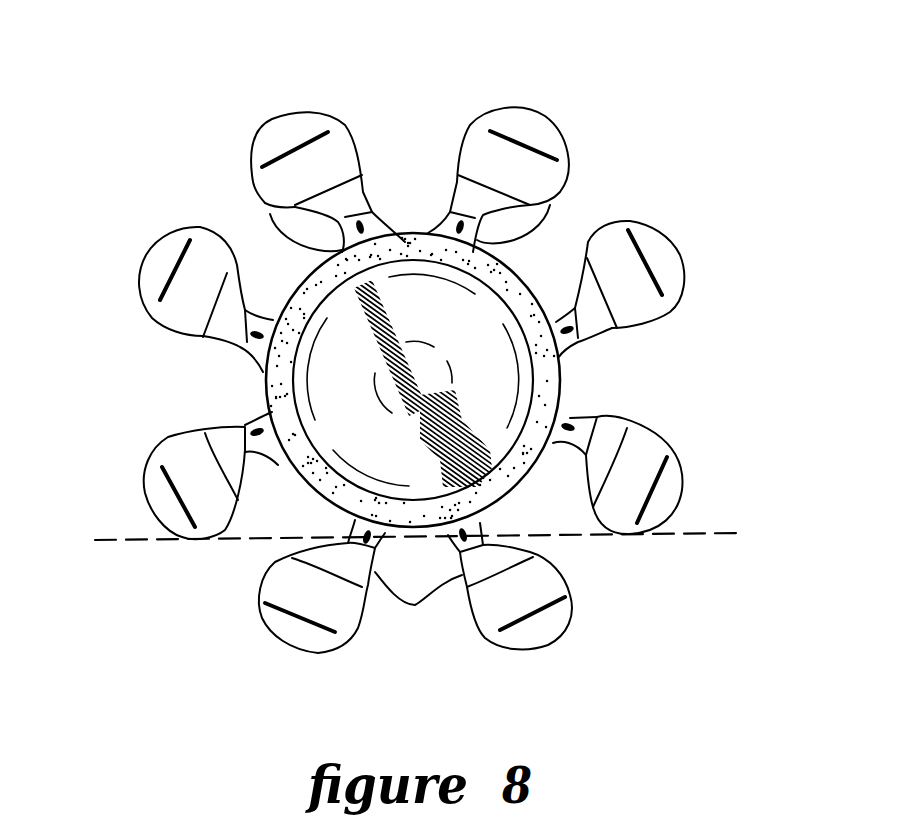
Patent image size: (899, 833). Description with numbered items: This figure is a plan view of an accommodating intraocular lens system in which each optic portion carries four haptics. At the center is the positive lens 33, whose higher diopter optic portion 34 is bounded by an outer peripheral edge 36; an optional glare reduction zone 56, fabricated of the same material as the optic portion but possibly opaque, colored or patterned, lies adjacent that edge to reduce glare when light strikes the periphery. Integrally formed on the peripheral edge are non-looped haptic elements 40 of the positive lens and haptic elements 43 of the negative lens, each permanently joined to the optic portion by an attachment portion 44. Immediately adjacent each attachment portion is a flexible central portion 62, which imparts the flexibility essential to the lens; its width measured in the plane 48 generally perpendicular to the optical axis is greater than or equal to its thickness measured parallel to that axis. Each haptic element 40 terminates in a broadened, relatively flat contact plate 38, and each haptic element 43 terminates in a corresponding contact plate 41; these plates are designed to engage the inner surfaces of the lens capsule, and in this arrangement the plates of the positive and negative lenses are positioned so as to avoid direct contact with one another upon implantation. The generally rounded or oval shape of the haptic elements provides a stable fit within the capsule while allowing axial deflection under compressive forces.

The positive lens 33 is at (563, 370).
The higher diopter optic portion 34 is at (413, 397).
The outer peripheral edge 36 is at (532, 378).
The contact plate 38 is at (278, 115).
The haptic element 40 is at (348, 132).
The contact plate 41 is at (150, 262).
The haptic element 43 is at (683, 296).
The attachment portion 44 is at (272, 216).
The plane 48 is at (416, 537).
The glare reduction zone 56 is at (548, 212).
The flexible central portion 62 is at (368, 195).